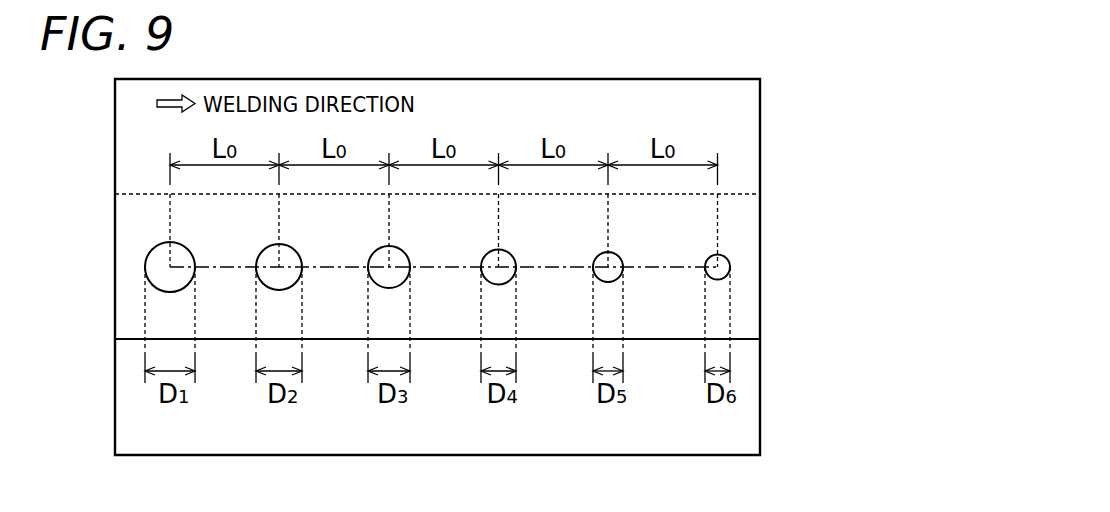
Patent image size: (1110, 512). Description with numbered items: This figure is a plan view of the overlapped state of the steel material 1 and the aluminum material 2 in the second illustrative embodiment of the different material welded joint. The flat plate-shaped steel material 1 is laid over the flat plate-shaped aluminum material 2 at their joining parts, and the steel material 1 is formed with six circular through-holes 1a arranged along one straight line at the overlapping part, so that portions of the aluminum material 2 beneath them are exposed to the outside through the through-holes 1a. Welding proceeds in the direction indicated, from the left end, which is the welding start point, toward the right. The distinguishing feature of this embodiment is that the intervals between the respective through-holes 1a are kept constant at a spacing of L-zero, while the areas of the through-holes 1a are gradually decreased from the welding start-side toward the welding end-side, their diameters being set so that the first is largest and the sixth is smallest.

The steel material 1 is at (735, 118).
The through-hole 1a is at (188, 268).
The aluminum material 2 is at (735, 418).